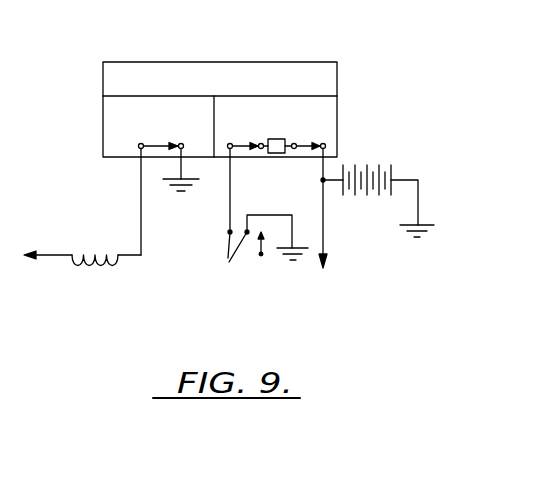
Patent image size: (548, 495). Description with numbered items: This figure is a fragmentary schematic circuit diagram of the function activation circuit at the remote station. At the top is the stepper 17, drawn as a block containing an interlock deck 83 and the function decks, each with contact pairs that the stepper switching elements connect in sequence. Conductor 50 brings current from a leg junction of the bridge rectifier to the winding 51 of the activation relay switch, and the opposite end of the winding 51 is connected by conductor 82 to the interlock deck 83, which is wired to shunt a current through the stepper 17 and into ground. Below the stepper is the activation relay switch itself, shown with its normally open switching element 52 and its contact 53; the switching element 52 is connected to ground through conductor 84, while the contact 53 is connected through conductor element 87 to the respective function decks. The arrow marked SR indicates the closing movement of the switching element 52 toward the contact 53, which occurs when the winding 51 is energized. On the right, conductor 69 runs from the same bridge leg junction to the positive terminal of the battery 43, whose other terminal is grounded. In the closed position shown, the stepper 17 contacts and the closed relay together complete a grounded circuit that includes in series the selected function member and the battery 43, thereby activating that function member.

The stepper 17 is at (307, 62).
The interlock deck 83 is at (120, 126).
The conductor 82 is at (141, 218).
The winding 51 is at (103, 268).
The conductor 50 is at (60, 255).
The conductor element 87 is at (230, 210).
The contact 53 is at (229, 251).
The switching element 52 is at (241, 243).
The switch movement direction SR is at (234, 264).
The conductor 84 is at (264, 215).
The conductor 69 is at (325, 224).
The battery 43 is at (370, 165).